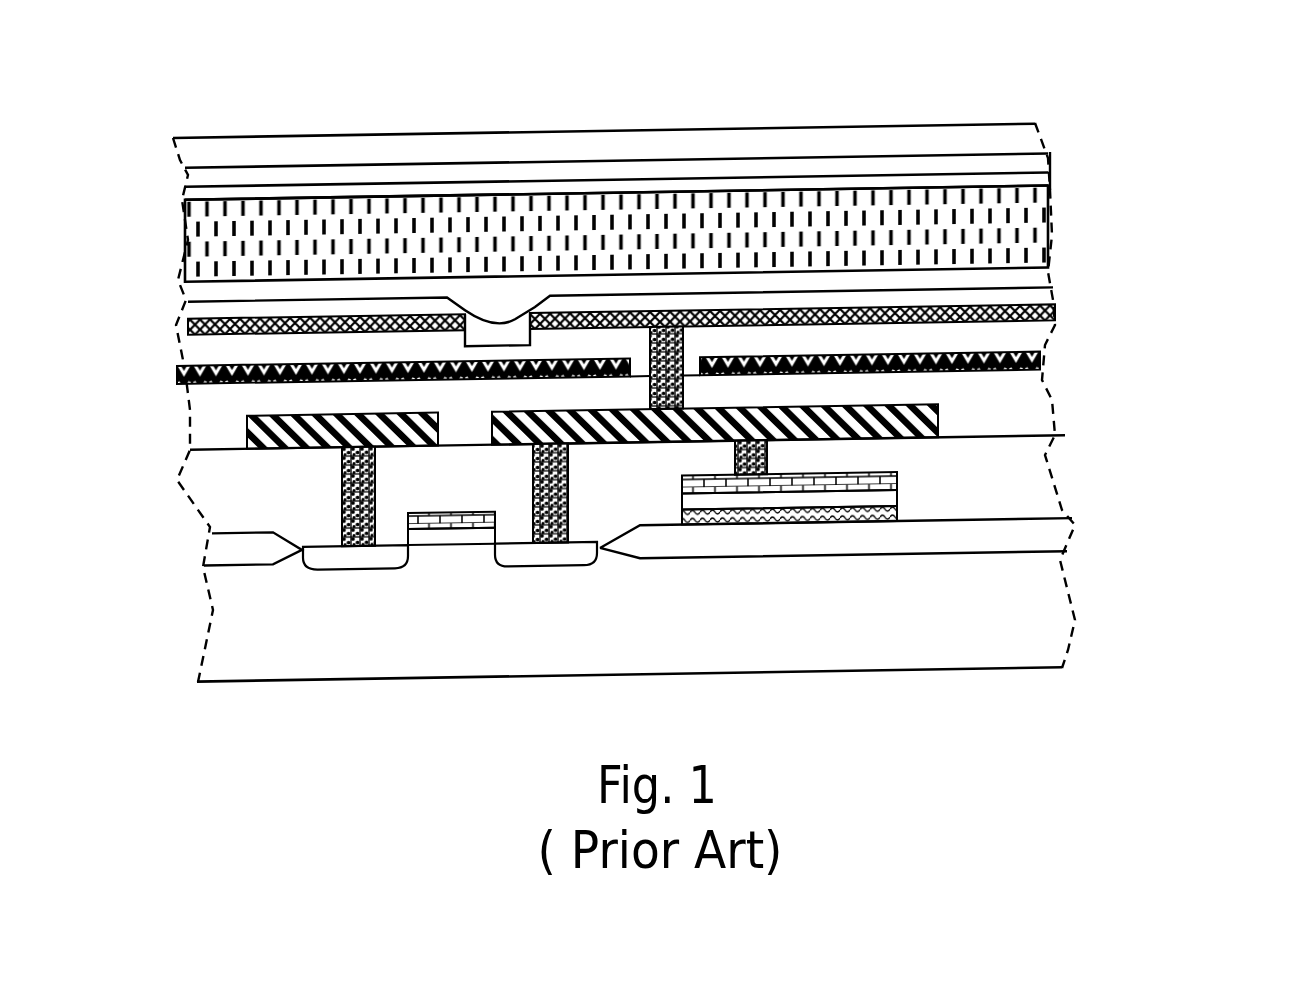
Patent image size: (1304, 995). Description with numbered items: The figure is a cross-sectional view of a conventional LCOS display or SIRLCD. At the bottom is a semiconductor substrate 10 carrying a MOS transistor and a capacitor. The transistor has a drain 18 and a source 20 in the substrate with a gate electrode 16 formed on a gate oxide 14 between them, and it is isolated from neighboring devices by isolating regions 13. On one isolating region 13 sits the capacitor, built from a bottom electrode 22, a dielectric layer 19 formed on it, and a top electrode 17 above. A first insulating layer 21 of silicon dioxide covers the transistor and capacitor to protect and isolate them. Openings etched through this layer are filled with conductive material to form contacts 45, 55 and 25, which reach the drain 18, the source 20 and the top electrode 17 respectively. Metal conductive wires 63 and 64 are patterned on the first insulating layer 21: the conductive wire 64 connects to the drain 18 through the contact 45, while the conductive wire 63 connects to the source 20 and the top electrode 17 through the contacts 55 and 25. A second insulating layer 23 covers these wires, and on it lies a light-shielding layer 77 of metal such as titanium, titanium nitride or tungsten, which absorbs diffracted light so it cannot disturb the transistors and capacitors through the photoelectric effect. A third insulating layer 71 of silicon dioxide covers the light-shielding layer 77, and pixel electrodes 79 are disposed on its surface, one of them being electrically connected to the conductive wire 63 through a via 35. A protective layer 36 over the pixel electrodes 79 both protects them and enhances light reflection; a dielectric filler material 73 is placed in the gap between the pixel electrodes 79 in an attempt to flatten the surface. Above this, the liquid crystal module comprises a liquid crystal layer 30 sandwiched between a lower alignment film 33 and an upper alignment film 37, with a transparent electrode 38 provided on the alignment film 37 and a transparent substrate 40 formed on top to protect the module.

The semiconductor substrate 10 is at (1028, 617).
The isolating region 13 is at (1040, 542).
The gate oxide 14 is at (445, 540).
The gate electrode 16 is at (470, 512).
The top electrode 17 is at (893, 472).
The drain 18 is at (357, 565).
The dielectric layer 19 is at (877, 498).
The source 20 is at (538, 562).
The first insulating layer 21 is at (1028, 453).
The bottom electrode 22 is at (817, 520).
The second insulating layer 23 is at (1032, 413).
The contact 25 is at (768, 458).
The liquid crystal layer 30 is at (873, 207).
The alignment film 33 is at (1020, 277).
The via 35 is at (660, 350).
The protective layer 36 is at (1032, 298).
The alignment film 37 is at (1028, 178).
The transparent electrode 38 is at (763, 167).
The transparent substrate 40 is at (1023, 138).
The contact 45 is at (353, 495).
The contact 55 is at (547, 493).
The conductive wire 63 is at (885, 407).
The conductive wire 64 is at (247, 430).
The third insulating layer 71 is at (1007, 343).
The dielectric filler material 73 is at (505, 338).
The light-shielding layer 77 is at (1043, 362).
The pixel electrode 79 is at (1057, 315).